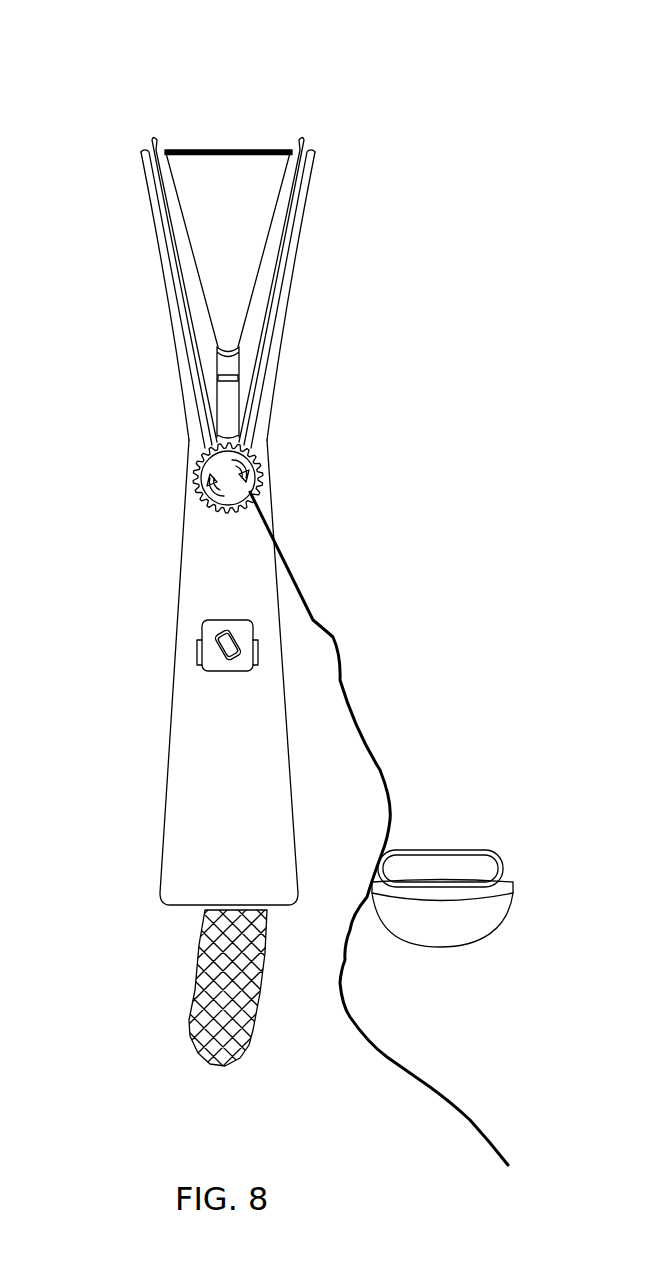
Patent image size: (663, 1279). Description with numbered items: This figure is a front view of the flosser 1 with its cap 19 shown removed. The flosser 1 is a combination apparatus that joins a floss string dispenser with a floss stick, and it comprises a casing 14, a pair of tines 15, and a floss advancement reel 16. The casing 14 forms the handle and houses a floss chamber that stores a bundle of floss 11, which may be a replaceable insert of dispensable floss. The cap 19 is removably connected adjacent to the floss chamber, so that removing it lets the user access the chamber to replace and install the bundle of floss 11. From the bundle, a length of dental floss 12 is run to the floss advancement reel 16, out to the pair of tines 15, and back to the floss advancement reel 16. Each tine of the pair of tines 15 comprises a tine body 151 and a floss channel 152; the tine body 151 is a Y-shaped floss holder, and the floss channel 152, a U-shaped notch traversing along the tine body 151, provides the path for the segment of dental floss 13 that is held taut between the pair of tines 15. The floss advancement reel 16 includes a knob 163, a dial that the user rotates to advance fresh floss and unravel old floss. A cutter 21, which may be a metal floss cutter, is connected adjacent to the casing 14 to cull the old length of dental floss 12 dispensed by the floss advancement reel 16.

The flosser 1 is at (445, 31).
The bundle of floss 11 is at (195, 985).
The length of dental floss 12 is at (330, 636).
The segment of dental floss 13 is at (232, 151).
The casing 14 is at (118, 603).
The pair of tines 15 is at (349, 212).
The tine body 151 is at (150, 222).
The floss channel 152 is at (168, 302).
The floss advancement reel 16 is at (268, 497).
The knob 163 is at (190, 443).
The cap 19 is at (458, 948).
The cutter 21 is at (222, 672).